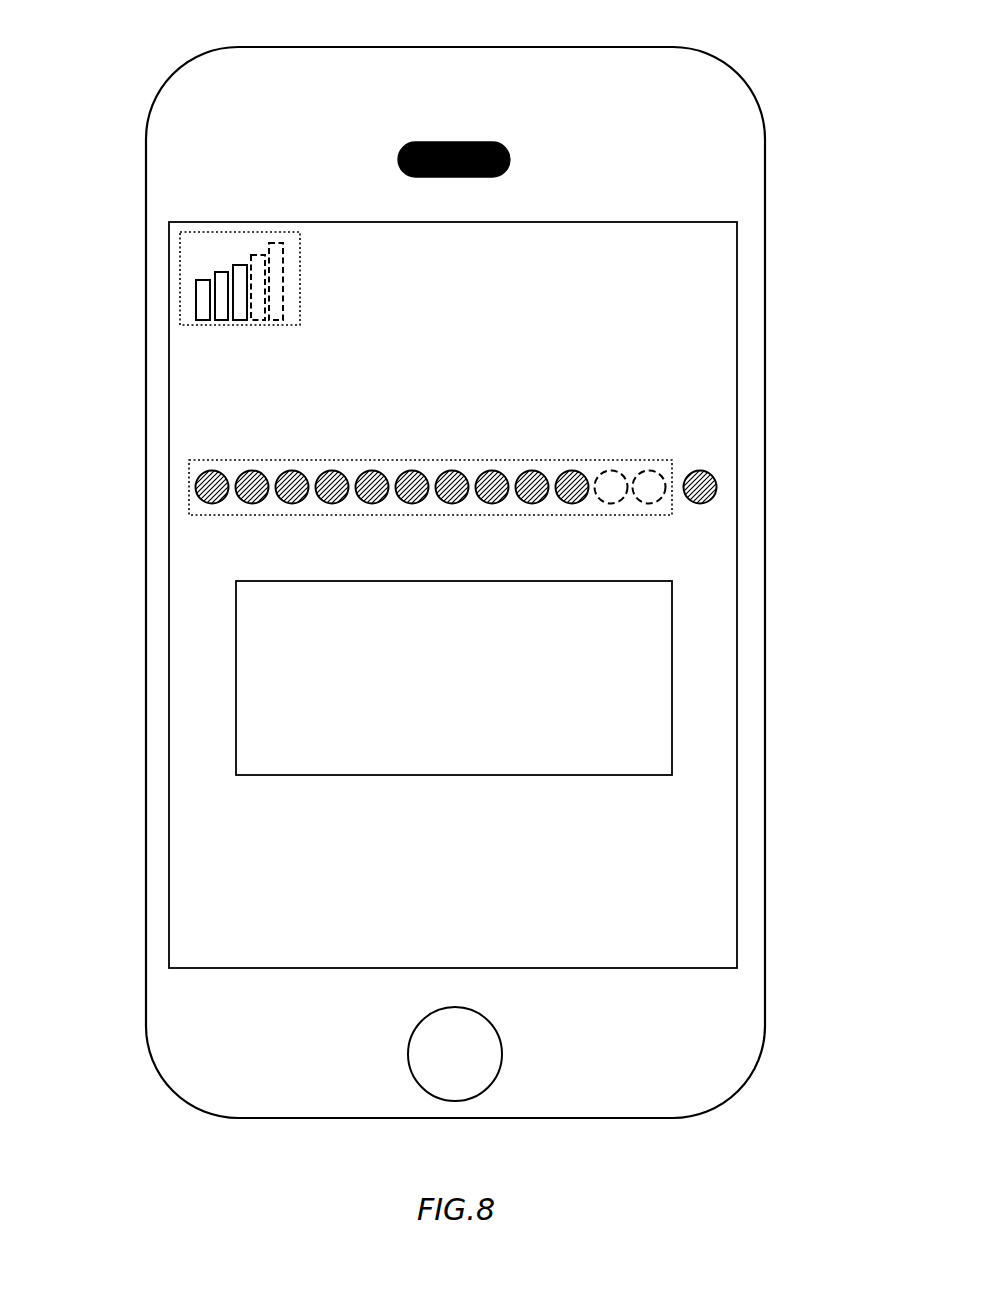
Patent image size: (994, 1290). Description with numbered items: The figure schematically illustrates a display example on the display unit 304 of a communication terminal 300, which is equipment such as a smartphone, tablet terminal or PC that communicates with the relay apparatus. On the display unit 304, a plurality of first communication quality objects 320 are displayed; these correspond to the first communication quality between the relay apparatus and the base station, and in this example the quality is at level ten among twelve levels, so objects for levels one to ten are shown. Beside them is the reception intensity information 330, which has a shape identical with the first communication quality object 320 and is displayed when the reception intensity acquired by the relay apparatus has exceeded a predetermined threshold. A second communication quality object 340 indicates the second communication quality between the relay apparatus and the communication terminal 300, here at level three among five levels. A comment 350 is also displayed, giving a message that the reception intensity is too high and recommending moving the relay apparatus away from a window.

The communication terminal 300 is at (153, 47).
The display unit 304 is at (673, 222).
The second communication quality object 340 is at (182, 280).
The first communication quality object 320 is at (190, 487).
The reception intensity information 330 is at (717, 485).
The comment 350 is at (206, 655).